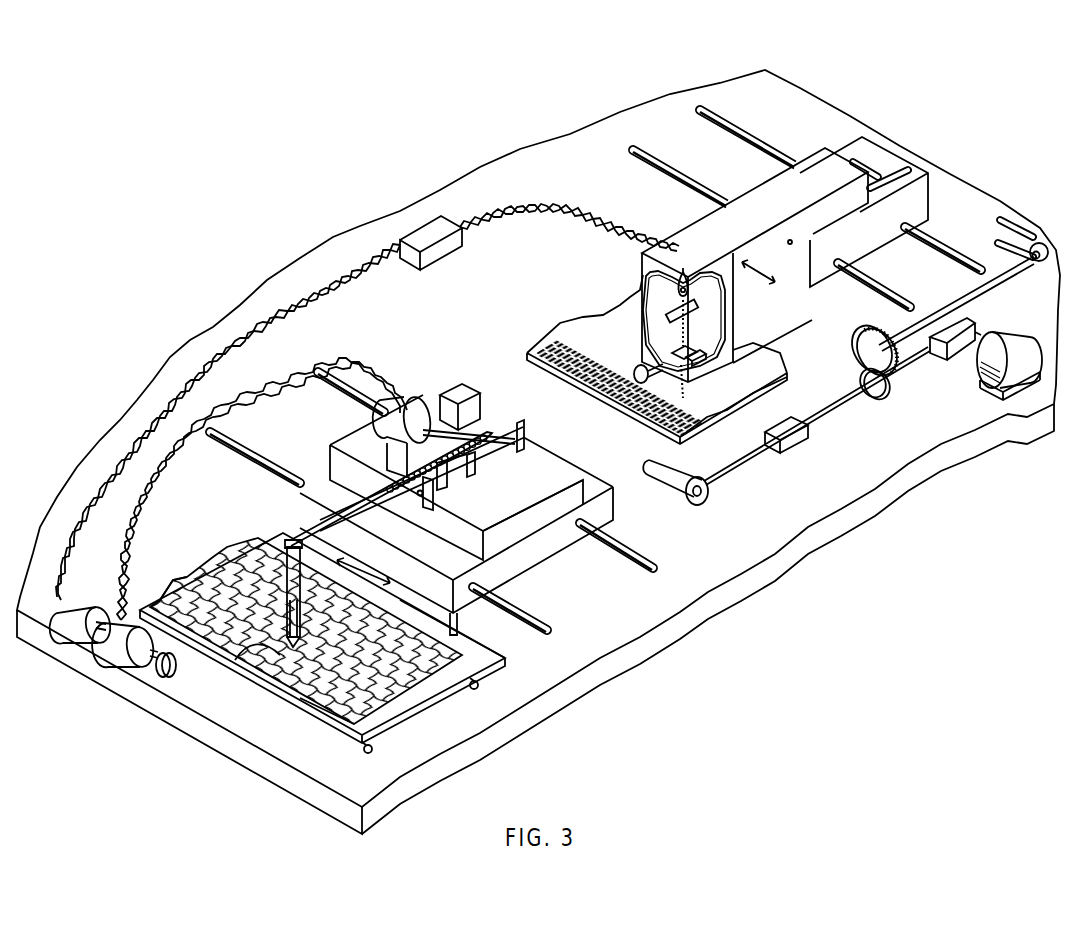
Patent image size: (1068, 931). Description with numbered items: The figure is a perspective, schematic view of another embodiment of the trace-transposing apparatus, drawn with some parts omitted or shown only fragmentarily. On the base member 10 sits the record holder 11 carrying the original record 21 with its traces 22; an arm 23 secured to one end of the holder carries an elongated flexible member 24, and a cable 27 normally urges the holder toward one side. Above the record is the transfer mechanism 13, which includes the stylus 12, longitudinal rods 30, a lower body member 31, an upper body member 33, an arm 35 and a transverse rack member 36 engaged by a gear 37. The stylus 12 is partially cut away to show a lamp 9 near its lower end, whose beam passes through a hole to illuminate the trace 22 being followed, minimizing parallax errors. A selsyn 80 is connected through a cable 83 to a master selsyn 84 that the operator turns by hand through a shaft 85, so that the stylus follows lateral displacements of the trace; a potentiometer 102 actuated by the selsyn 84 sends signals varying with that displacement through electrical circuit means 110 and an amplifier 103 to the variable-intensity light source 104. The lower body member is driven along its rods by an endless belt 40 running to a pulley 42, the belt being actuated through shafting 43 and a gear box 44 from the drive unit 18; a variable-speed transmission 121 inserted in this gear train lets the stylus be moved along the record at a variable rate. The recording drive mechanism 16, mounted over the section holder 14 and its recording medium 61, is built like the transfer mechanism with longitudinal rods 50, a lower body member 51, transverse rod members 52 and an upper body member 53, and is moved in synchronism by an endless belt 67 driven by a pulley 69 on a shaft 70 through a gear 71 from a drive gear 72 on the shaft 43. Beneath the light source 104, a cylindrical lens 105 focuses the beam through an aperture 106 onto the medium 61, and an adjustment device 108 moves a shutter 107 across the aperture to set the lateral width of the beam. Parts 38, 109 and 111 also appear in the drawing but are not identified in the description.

The lamp 9 is at (275, 648).
The base member 10 is at (808, 552).
The original record holder 11 is at (308, 703).
The stylus 12 is at (300, 563).
The transfer mechanism 13 is at (493, 527).
The section holder 14 is at (783, 377).
The recording drive mechanism 16 is at (880, 253).
The drive unit 18 is at (1005, 338).
The record 21 is at (245, 648).
The trace 22 is at (174, 588).
The arm 23 is at (498, 664).
The elongated flexible member 24 is at (484, 651).
The cable 27 is at (487, 710).
The longitudinal rods 30 is at (633, 548).
The lower body member 31 is at (614, 504).
The upper body member 33 is at (506, 430).
The arm 35 is at (300, 538).
The transverse rack member 36 is at (467, 427).
The gear 37 is at (440, 398).
The guide rod 38 is at (457, 619).
The endless belt 40 is at (683, 468).
The pulley 42 is at (706, 493).
The shafting 43 is at (834, 412).
The gear box 44 is at (967, 318).
The longitudinal rods 50 is at (888, 291).
The lower body member 51 is at (930, 206).
The transverse rod members 52 is at (888, 178).
The upper body member 53 is at (808, 168).
The section-recording medium 61 is at (760, 354).
The endless belt 67 is at (1022, 228).
The pulley 69 is at (1030, 226).
The shaft 70 is at (1008, 277).
The gear 71 is at (860, 330).
The drive gear 72 is at (889, 388).
The selsyn 80 is at (398, 404).
The cable 83 is at (328, 360).
The master selsyn 84 is at (140, 653).
The shaft 85 is at (144, 663).
The potentiometer 102 is at (70, 600).
The amplifier 103 is at (445, 222).
The variable-intensity light source 104 is at (692, 297).
The cylindrical-type lens 105 is at (697, 314).
The aperture 106 is at (688, 348).
The shutter 107 is at (694, 358).
The adjustment device 108 is at (637, 357).
The light beam 109 is at (684, 391).
The electrical circuit means 110 is at (566, 216).
The sensor housing 111 is at (641, 262).
The variable-speed transmission 121 is at (796, 444).